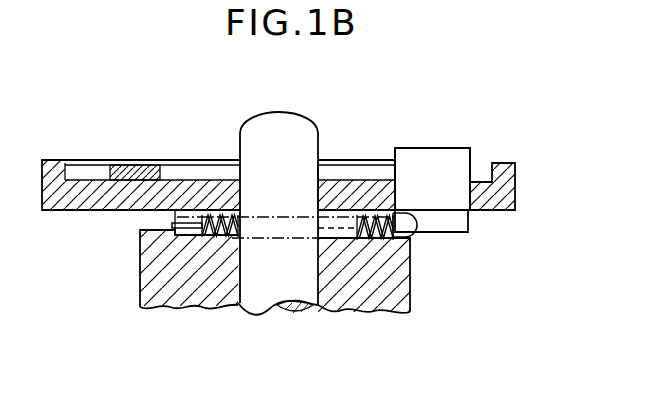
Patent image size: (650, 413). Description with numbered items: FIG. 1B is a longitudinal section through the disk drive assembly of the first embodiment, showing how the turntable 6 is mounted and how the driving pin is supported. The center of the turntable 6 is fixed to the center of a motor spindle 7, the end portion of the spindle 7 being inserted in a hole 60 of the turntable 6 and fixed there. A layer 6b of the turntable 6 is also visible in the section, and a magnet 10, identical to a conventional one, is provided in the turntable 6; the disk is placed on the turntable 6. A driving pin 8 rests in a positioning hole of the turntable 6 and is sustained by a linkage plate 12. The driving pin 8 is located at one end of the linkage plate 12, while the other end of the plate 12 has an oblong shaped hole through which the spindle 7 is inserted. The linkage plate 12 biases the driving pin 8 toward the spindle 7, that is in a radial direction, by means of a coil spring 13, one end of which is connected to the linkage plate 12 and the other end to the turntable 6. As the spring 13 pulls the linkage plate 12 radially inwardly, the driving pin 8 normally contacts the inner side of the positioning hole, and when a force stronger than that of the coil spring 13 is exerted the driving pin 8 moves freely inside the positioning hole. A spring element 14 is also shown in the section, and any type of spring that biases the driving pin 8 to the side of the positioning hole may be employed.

The turntable 6 is at (515, 180).
The cover layer of plate 6b is at (82, 161).
The motor spindle 7 is at (303, 117).
The driving pin 8 is at (455, 148).
The magnet 10 is at (134, 165).
The linkage plate 12 is at (455, 222).
The coil spring 13 is at (363, 242).
The spring 14 is at (178, 218).
The hole 60 is at (314, 191).